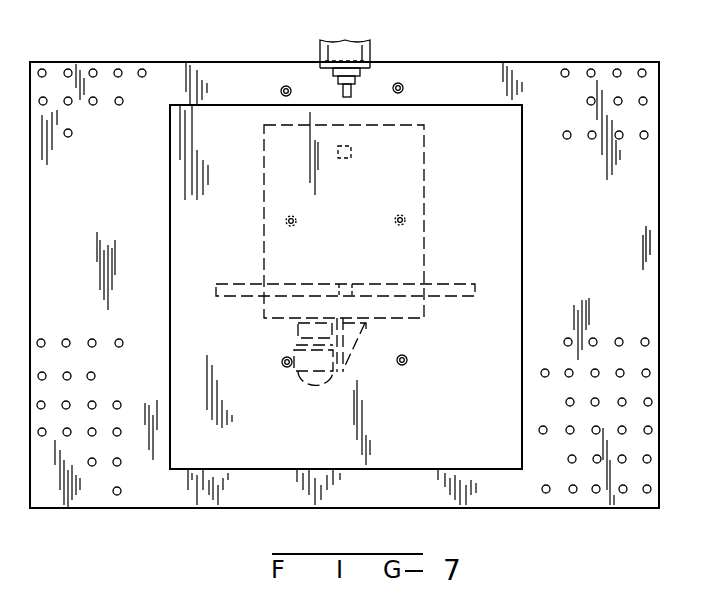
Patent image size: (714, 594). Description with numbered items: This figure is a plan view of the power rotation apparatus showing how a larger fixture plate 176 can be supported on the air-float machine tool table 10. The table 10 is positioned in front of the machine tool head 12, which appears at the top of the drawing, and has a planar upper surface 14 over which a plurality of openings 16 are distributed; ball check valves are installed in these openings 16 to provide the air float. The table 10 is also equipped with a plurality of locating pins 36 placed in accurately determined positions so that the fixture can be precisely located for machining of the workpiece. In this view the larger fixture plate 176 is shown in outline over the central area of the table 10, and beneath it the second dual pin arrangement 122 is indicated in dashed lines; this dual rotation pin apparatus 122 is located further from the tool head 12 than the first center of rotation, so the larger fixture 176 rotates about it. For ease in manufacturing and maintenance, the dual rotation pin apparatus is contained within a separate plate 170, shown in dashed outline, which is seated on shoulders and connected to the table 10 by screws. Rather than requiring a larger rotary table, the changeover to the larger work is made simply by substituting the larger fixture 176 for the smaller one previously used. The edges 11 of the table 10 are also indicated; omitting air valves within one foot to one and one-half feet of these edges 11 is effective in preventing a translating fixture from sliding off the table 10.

The air-float machine tool table 10 is at (659, 327).
The edges of table 11 is at (659, 433).
The machine tool head 12 is at (370, 52).
The planar upper surface 14 is at (647, 252).
The openings 16 is at (646, 73).
The locating pins 36 is at (280, 91).
The second dual pin arrangement 122 is at (352, 154).
The separate plate 170 is at (424, 239).
The larger fixture plate 176 is at (484, 117).